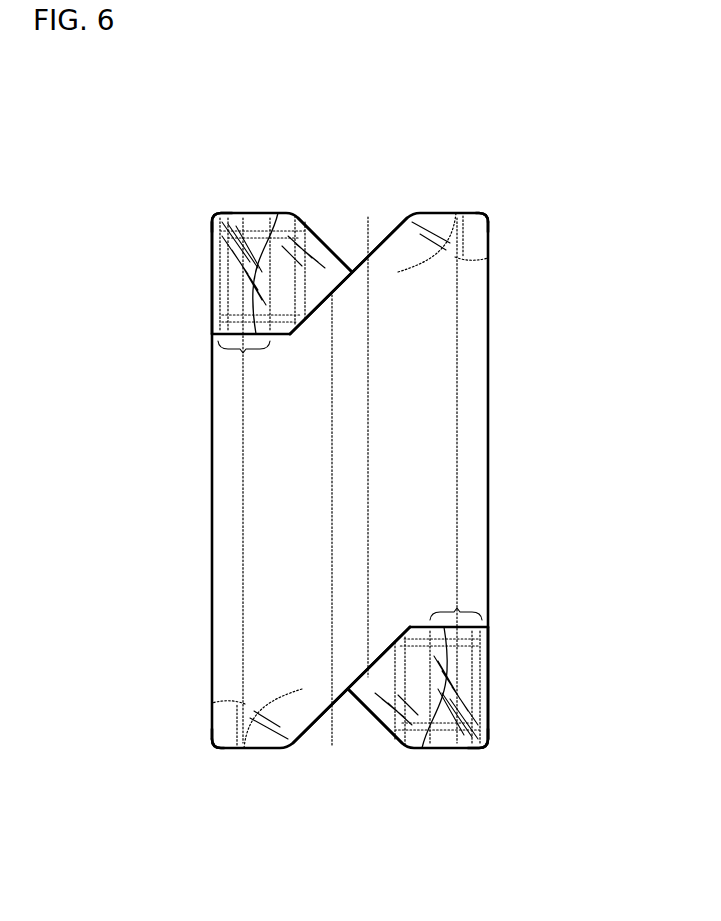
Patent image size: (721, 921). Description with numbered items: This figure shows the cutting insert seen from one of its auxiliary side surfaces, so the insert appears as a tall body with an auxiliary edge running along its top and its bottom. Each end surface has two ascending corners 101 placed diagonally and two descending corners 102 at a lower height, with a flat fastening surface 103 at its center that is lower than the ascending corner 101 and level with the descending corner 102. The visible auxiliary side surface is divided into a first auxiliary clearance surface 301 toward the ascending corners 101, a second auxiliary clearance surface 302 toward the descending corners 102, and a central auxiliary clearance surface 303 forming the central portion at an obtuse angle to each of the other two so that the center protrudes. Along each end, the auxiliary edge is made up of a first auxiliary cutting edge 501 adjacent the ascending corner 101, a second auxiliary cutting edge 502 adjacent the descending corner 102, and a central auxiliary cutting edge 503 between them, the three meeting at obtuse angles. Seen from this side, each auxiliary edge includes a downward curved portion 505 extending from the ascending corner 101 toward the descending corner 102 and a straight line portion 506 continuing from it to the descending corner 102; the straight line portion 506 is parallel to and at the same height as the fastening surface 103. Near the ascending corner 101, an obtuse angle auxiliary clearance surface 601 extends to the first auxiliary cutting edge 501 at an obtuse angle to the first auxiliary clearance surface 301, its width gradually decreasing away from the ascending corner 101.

The ascending corner 101 is at (158, 772).
The descending corner 102 is at (212, 336).
The fastening surface 103 is at (220, 318).
The first auxiliary clearance surface 301 is at (553, 511).
The second auxiliary clearance surface 302 is at (258, 517).
The central auxiliary clearance surface 303 is at (553, 432).
The first auxiliary cutting edge 501 is at (258, 790).
The second auxiliary cutting edge 502 is at (278, 212).
The central auxiliary cutting edge 503 is at (352, 270).
The downward curved portion 505 is at (457, 247).
The straight line portion 506 is at (350, 480).
The obtuse angle auxiliary clearance surface 601 is at (553, 243).